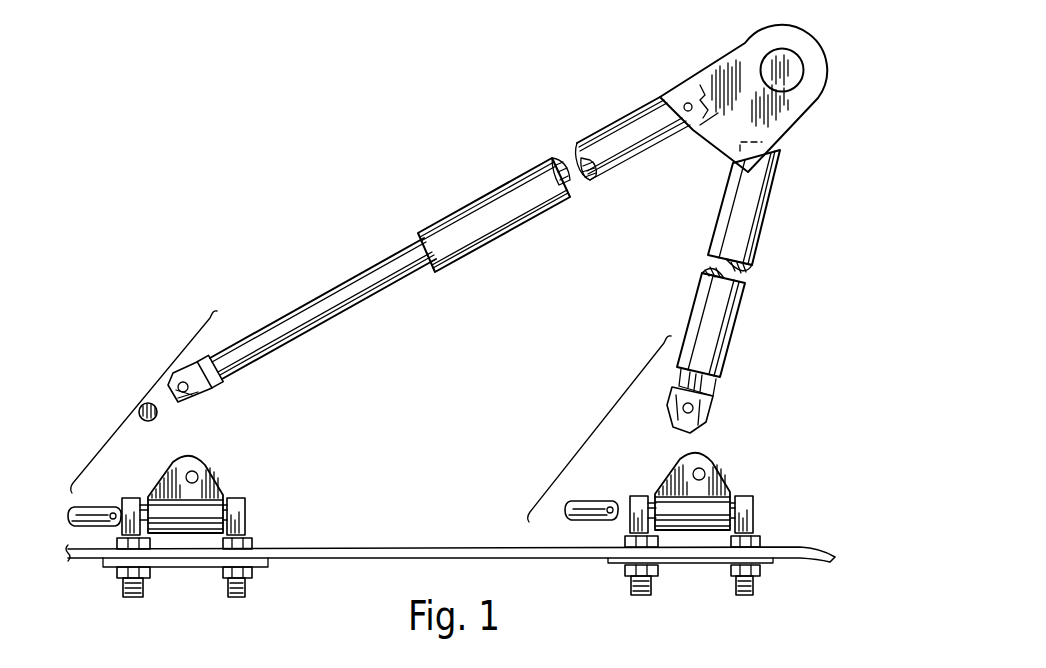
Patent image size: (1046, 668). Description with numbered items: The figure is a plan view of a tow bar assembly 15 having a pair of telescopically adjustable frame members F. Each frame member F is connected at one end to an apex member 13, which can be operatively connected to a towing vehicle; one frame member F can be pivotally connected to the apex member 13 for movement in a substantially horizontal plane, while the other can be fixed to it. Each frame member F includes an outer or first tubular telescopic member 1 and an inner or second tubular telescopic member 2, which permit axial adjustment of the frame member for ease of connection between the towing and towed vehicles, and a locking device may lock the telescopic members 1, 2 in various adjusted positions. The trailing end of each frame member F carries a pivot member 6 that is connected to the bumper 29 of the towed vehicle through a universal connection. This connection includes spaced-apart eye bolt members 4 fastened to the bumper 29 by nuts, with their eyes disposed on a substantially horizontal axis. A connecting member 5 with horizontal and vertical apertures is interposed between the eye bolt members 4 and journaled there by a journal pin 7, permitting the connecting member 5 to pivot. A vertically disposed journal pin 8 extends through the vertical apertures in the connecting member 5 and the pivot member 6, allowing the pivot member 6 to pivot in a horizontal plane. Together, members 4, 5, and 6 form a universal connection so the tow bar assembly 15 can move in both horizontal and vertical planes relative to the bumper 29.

The outer telescopic member 1 is at (623, 118).
The inner telescopic member 2 is at (313, 300).
The eye bolt members 4 is at (246, 507).
The connecting member 5 is at (212, 468).
The pivot member 6 is at (210, 390).
The journal pin 7 is at (103, 504).
The vertically disposed journal pin 8 is at (157, 417).
The apex member 13 is at (730, 53).
The tow bar assembly 15 is at (556, 99).
The bumper 29 is at (378, 548).
The frame members F is at (438, 193).